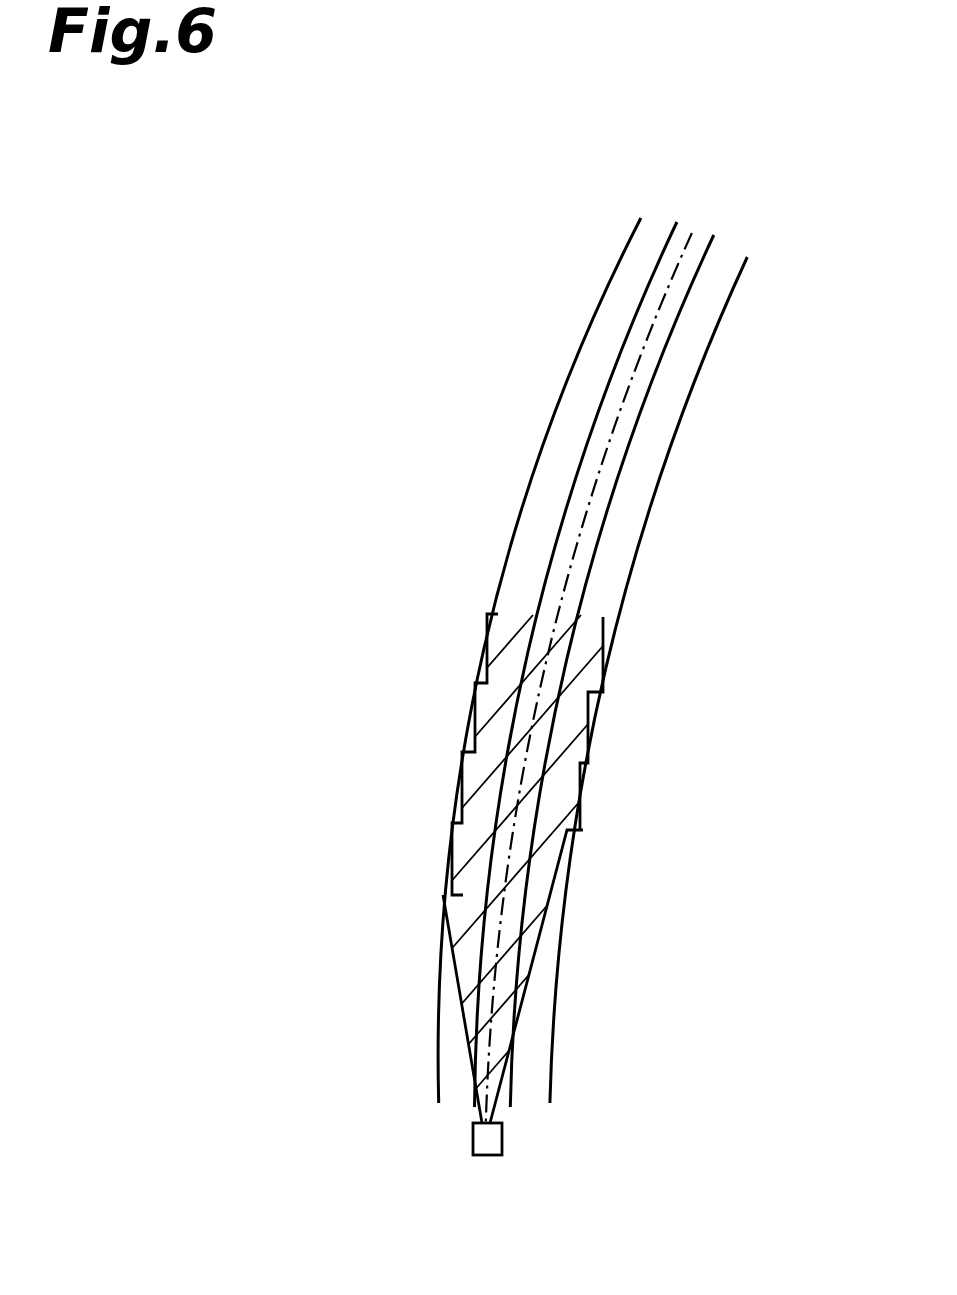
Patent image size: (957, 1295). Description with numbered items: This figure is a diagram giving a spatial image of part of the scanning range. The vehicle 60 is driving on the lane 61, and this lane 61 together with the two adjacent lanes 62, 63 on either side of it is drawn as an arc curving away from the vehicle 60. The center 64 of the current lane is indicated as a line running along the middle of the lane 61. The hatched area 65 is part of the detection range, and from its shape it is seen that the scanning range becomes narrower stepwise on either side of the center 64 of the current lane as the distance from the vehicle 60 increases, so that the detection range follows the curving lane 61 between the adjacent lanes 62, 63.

The vehicle 60 is at (503, 1140).
The lane 61 is at (622, 641).
The adjacent lane 62 is at (561, 631).
The adjacent lane 63 is at (664, 651).
The center of the current lane 64 is at (640, 349).
The hatched area 65 is at (542, 987).